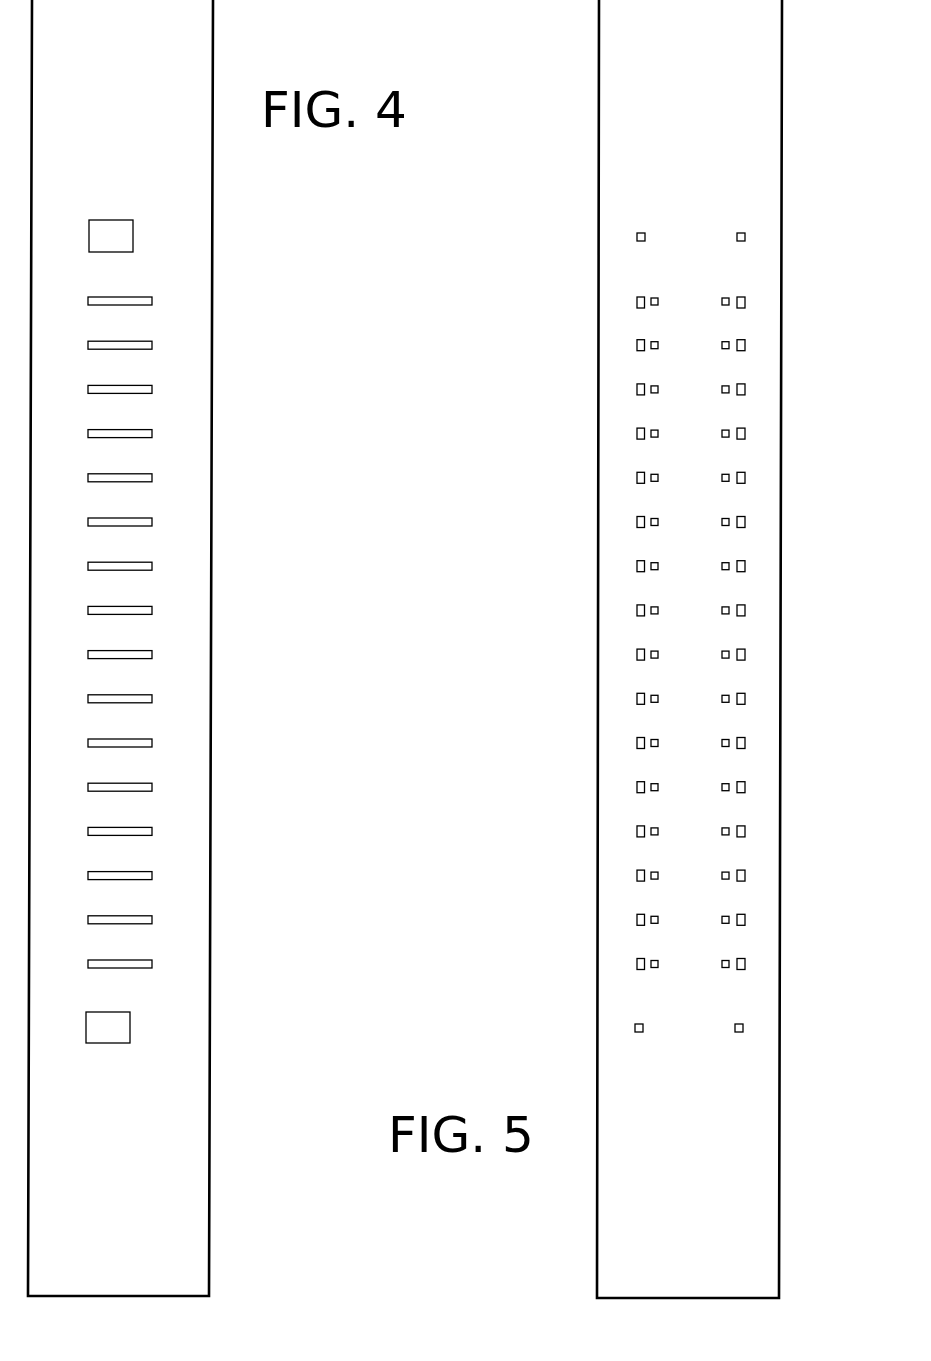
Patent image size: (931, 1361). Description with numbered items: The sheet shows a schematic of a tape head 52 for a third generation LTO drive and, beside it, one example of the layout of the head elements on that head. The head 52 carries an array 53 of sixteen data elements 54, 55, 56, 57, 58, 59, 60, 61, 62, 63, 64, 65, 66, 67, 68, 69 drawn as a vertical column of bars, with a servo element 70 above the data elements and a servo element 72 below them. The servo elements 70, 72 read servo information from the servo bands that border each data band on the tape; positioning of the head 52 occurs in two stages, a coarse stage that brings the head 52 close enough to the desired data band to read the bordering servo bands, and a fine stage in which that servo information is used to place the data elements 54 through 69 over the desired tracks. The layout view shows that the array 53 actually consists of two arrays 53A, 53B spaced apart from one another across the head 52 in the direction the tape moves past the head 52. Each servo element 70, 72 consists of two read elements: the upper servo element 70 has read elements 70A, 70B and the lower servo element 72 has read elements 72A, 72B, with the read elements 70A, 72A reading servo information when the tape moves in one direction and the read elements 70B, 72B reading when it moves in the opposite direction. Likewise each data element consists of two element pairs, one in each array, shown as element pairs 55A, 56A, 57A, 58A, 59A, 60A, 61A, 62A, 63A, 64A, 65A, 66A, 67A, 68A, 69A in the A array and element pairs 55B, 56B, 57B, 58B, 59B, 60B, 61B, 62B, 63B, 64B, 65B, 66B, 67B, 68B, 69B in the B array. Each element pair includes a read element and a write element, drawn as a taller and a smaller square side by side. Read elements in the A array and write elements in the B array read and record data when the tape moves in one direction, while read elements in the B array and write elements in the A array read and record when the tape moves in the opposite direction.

In FIG. 4, the head 52 is at (199, 1240).
In FIG. 5, the head 52 is at (768, 1243).
In FIG. 4, the array 53 is at (111, 1058).
In FIG. 5, the array 53 is at (680, 1061).
In FIG. 5, the array 53A is at (643, 212).
In FIG. 5, the array 53B is at (737, 212).
In FIG. 4, the data element 54 is at (150, 302).
In FIG. 4, the data element 55 is at (150, 346).
In FIG. 4, the data element 56 is at (150, 390).
In FIG. 4, the data element 57 is at (150, 435).
In FIG. 4, the data element 58 is at (150, 479).
In FIG. 4, the data element 59 is at (150, 523).
In FIG. 4, the data element 60 is at (150, 567).
In FIG. 4, the data element 61 is at (150, 611).
In FIG. 4, the data element 62 is at (150, 656).
In FIG. 4, the data element 63 is at (150, 700).
In FIG. 4, the data element 64 is at (150, 744).
In FIG. 4, the data element 65 is at (150, 788).
In FIG. 4, the data element 66 is at (150, 832).
In FIG. 4, the data element 67 is at (150, 877).
In FIG. 4, the data element 68 is at (150, 921).
In FIG. 4, the data element 69 is at (150, 965).
In FIG. 4, the servo element 70 is at (128, 237).
In FIG. 4, the servo element 72 is at (125, 1029).
In FIG. 5, the read element 70A is at (637, 237).
In FIG. 5, the read element 70B is at (745, 237).
In FIG. 5, the element pair 55A is at (636, 344).
In FIG. 5, the element pair 56A is at (636, 388).
In FIG. 5, the element pair 57A is at (636, 433).
In FIG. 5, the element pair 58A is at (636, 477).
In FIG. 5, the element pair 59A is at (636, 521).
In FIG. 5, the element pair 60A is at (636, 565).
In FIG. 5, the element pair 61A is at (636, 609).
In FIG. 5, the element pair 62A is at (636, 654).
In FIG. 5, the element pair 63A is at (636, 698).
In FIG. 5, the element pair 64A is at (636, 742).
In FIG. 5, the element pair 65A is at (636, 786).
In FIG. 5, the element pair 66A is at (636, 830).
In FIG. 5, the element pair 67A is at (636, 875).
In FIG. 5, the element pair 68A is at (636, 919).
In FIG. 5, the element pair 69A is at (636, 963).
In FIG. 5, the element pair 55B is at (746, 343).
In FIG. 5, the element pair 56B is at (746, 387).
In FIG. 5, the element pair 57B is at (746, 432).
In FIG. 5, the element pair 58B is at (746, 476).
In FIG. 5, the element pair 59B is at (746, 520).
In FIG. 5, the element pair 60B is at (746, 564).
In FIG. 5, the element pair 61B is at (746, 608).
In FIG. 5, the element pair 62B is at (746, 653).
In FIG. 5, the element pair 63B is at (746, 697).
In FIG. 5, the element pair 64B is at (746, 741).
In FIG. 5, the element pair 65B is at (746, 785).
In FIG. 5, the element pair 66B is at (746, 829).
In FIG. 5, the element pair 67B is at (746, 874).
In FIG. 5, the element pair 68B is at (746, 918).
In FIG. 5, the element pair 69B is at (746, 962).
In FIG. 5, the read element 72A is at (635, 1028).
In FIG. 5, the read element 72B is at (743, 1027).